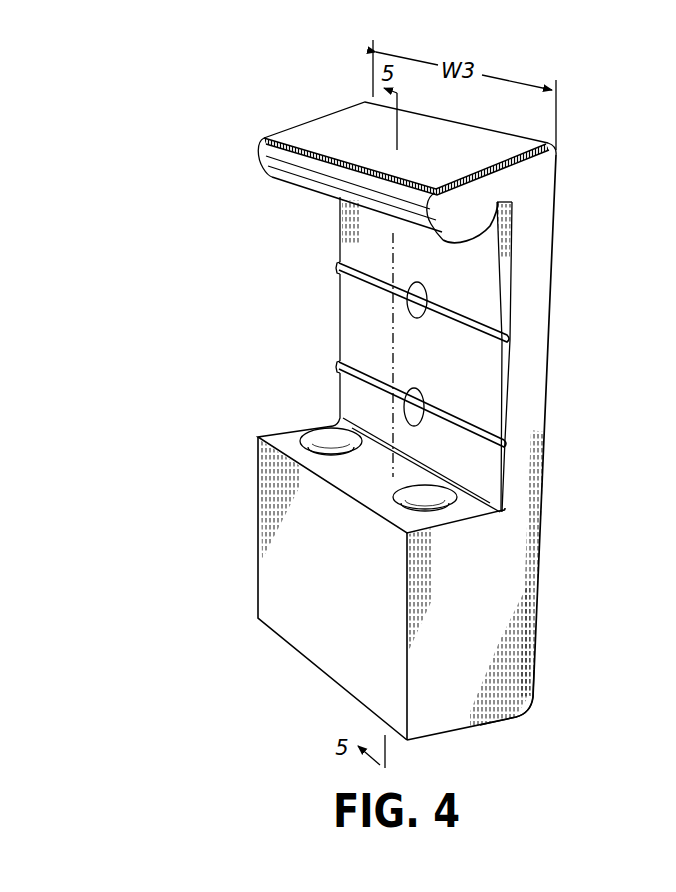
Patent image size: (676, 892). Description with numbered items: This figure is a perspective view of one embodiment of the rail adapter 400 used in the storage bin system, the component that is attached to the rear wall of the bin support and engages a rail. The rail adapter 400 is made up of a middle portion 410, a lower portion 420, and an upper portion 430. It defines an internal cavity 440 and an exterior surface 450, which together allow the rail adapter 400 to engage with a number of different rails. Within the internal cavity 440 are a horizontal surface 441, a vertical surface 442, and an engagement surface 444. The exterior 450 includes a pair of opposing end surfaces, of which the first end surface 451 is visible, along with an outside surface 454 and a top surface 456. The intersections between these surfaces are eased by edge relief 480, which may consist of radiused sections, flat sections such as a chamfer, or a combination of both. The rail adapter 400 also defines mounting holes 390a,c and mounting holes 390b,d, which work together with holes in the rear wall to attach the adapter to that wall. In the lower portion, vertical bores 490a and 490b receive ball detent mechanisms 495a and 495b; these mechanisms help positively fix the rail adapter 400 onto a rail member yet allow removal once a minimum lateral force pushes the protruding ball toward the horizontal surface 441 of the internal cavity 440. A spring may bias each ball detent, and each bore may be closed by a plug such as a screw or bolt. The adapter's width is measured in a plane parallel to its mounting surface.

The rail adapter 400 is at (206, 133).
The top surface 456 is at (327, 140).
The upper portion 430 is at (465, 215).
The edge relief 480 is at (513, 247).
The engagement surface 444 is at (380, 207).
The vertical surface 442 is at (380, 263).
The internal cavity 440 is at (478, 276).
The mounting holes 390a,c is at (408, 310).
The horizontal surface 441 is at (372, 467).
The mounting holes 390b,d is at (413, 426).
The middle portion 410 is at (527, 402).
The ball detent mechanism 495b is at (333, 432).
The vertical bore 490b is at (332, 452).
The ball detent mechanism 495a is at (430, 497).
The vertical bore 490a is at (438, 506).
The lower portion 420 is at (498, 662).
The outside surface 454 is at (338, 628).
The exterior surface 450 is at (473, 614).
The first end surface 451 is at (475, 693).